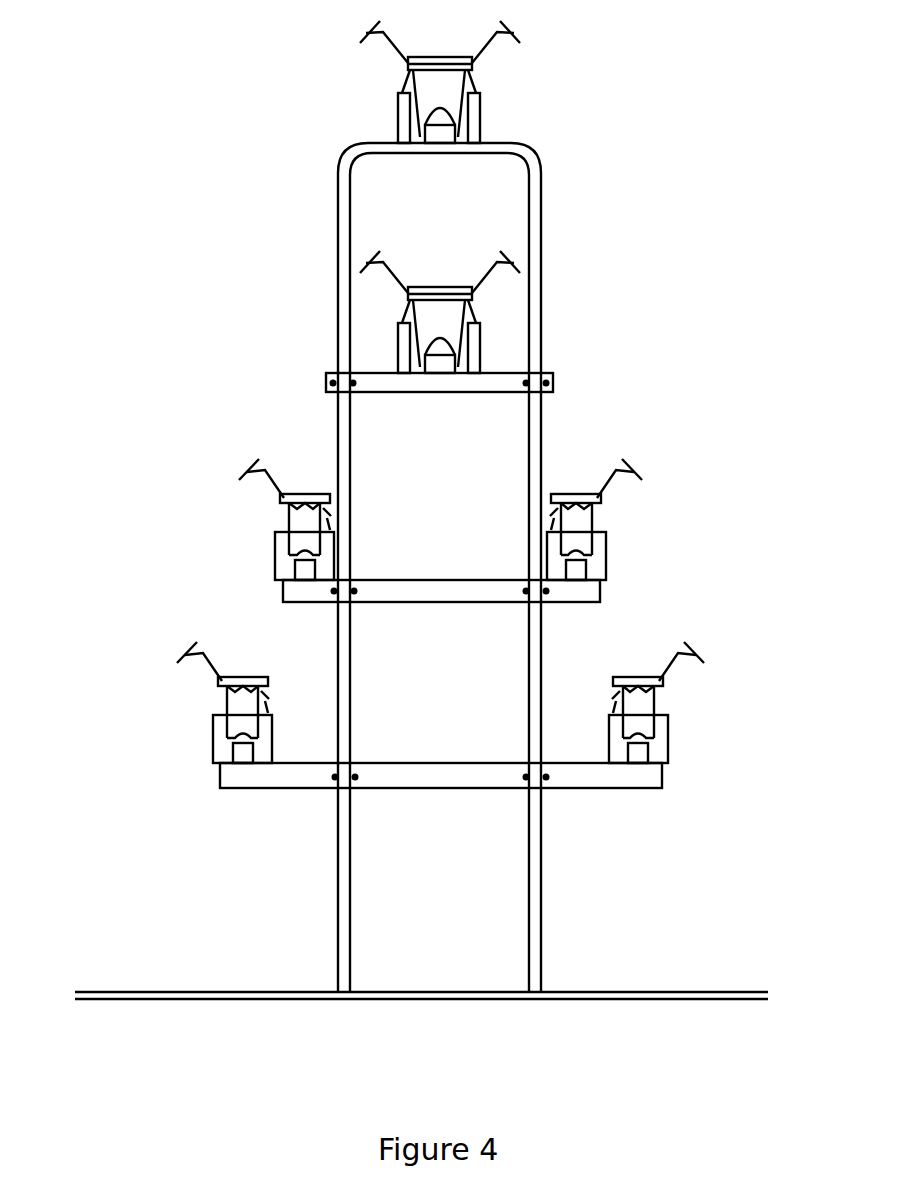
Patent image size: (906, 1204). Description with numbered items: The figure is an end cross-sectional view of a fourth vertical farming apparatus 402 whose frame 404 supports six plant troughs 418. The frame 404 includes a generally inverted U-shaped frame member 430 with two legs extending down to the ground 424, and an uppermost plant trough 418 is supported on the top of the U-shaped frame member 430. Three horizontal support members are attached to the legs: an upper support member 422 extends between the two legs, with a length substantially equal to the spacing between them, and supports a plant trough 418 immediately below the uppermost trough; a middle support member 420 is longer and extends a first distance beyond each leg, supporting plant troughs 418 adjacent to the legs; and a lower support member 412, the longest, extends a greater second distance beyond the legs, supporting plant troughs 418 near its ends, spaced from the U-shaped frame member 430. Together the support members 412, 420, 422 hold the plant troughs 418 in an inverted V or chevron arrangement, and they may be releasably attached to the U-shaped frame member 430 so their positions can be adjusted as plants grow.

The fourth vertical farming apparatus 402 is at (143, 87).
The frame 404 is at (652, 864).
The lower support member 412 is at (232, 776).
The plant trough 418 is at (480, 115).
The middle support member 420 is at (296, 591).
The upper support member 422 is at (328, 382).
The ground 424 is at (182, 992).
The U-shaped frame member 430 is at (343, 840).